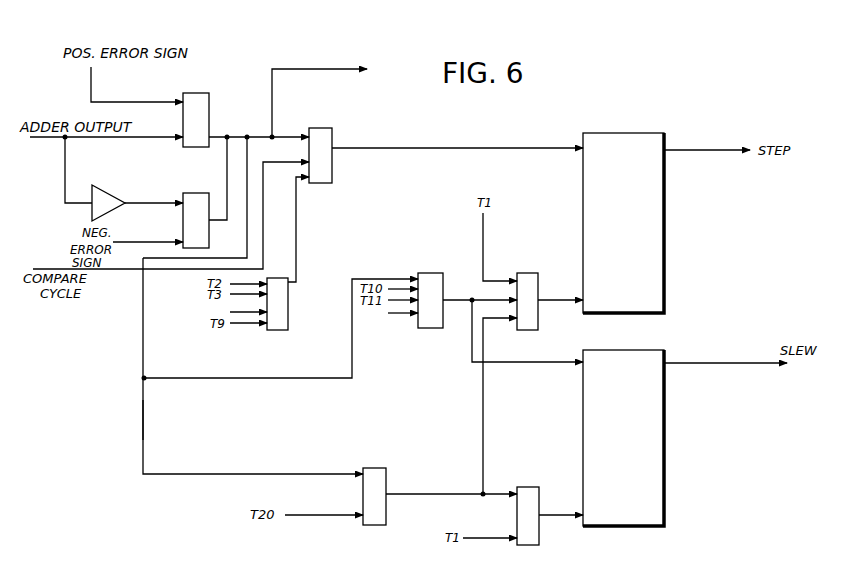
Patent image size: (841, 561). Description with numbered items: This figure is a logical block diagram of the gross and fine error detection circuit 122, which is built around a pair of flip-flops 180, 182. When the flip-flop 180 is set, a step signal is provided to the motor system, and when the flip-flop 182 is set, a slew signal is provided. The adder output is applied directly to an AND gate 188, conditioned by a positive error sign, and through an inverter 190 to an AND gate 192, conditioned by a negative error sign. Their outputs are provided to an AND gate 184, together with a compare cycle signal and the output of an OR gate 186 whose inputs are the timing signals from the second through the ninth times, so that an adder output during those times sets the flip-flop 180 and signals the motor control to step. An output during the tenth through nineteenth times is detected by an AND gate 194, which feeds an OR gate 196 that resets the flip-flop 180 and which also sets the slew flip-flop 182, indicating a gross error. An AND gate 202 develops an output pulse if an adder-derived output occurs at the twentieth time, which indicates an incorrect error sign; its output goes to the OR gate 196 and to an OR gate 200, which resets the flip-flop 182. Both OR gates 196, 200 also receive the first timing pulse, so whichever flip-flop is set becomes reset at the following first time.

The flip-flop 180 is at (645, 157).
The flip-flop 182 is at (633, 384).
The AND gate 184 is at (332, 130).
The OR gate 186 is at (283, 330).
The AND gate 188 is at (209, 98).
The inverter 190 is at (105, 193).
The AND gate 192 is at (209, 193).
The AND gate 194 is at (428, 273).
The OR gate 196 is at (532, 323).
The OR gate 200 is at (532, 487).
The AND gate 202 is at (386, 477).
The gross and fine error detection circuit 122 is at (140, 418).